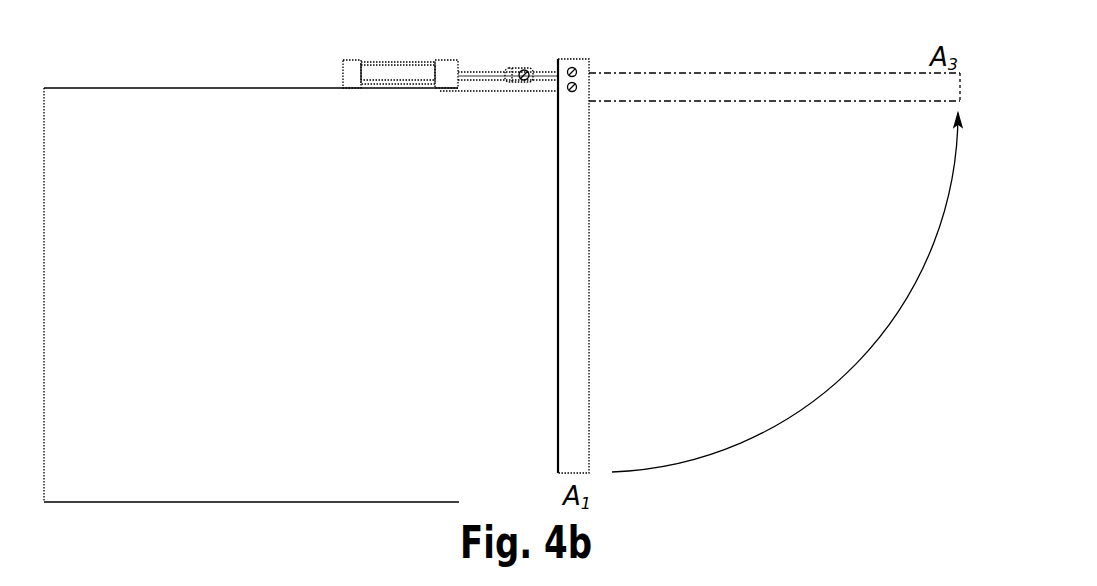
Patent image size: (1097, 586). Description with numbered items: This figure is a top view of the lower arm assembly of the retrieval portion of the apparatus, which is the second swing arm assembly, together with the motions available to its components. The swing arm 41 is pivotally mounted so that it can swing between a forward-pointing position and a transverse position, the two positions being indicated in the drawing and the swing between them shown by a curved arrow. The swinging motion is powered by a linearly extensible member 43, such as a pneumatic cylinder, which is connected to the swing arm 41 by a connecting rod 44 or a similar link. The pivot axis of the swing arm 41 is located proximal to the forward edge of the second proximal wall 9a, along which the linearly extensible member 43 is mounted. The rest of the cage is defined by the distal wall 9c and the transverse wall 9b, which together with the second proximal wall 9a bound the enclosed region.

The second proximal wall 9a is at (178, 88).
The transverse wall 9b is at (44, 177).
The distal wall 9c is at (182, 502).
The swing arm 41 is at (559, 352).
The linearly extensible member 43 is at (343, 70).
The connecting rod 44 is at (543, 70).